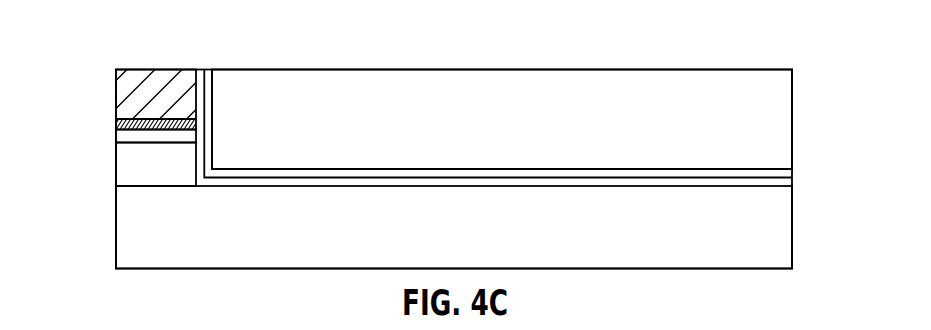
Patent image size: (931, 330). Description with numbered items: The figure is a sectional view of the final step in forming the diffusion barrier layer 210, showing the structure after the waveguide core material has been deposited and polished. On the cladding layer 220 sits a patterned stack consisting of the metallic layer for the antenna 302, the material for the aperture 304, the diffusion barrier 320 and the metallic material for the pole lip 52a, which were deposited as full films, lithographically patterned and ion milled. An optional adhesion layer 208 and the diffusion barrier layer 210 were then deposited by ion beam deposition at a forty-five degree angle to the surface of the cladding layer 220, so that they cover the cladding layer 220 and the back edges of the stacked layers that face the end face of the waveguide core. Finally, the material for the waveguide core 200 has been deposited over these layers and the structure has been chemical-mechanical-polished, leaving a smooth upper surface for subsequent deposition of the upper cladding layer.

The waveguide core 200 is at (502, 103).
The pole lip 52a is at (116, 92).
The diffusion barrier 320 is at (116, 128).
The aperture 304 is at (116, 137).
The antenna 302 is at (116, 168).
The cladding layer 220 is at (116, 228).
The adhesion layer 208 is at (207, 166).
The diffusion barrier layer 210 is at (212, 110).